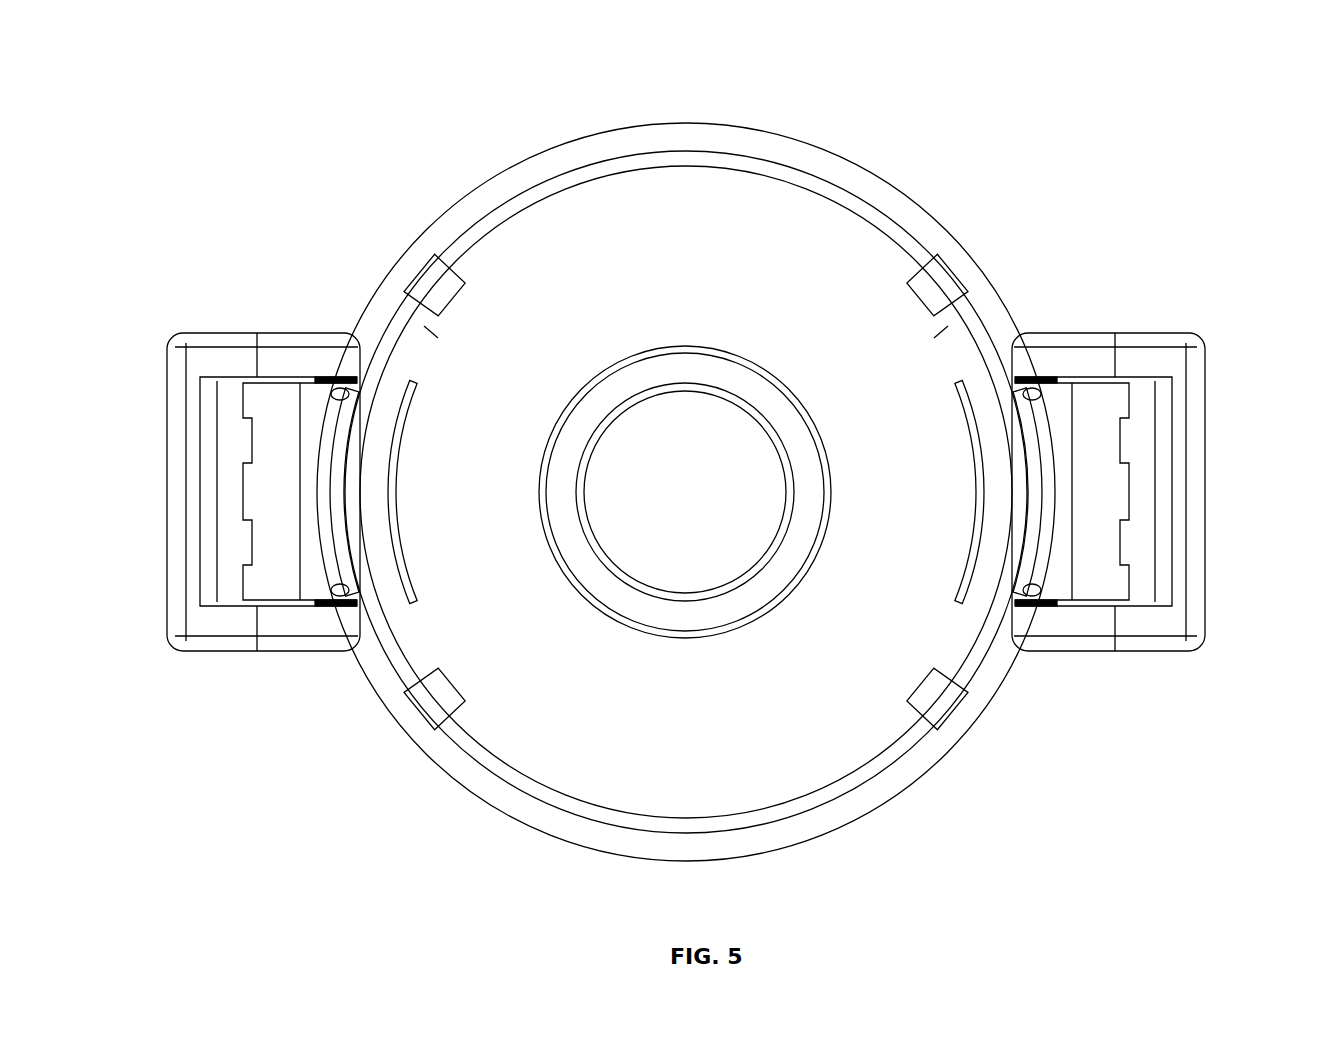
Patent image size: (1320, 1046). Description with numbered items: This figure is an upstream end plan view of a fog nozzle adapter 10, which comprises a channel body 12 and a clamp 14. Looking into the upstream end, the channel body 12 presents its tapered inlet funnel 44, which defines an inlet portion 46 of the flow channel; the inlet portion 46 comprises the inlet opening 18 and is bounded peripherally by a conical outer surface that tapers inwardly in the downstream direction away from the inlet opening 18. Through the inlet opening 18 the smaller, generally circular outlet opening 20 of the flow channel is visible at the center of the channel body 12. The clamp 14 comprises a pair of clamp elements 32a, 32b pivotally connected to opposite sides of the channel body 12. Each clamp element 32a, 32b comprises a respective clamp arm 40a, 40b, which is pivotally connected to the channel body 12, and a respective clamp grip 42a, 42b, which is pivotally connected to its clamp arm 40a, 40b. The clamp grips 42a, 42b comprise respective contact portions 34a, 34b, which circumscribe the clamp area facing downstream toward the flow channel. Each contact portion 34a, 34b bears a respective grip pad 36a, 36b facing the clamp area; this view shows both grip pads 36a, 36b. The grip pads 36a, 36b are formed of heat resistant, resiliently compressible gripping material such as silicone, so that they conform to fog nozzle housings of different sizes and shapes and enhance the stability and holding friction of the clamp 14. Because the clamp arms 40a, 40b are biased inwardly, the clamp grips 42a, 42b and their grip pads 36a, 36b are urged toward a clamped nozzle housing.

The fog nozzle adapter 10 is at (188, 72).
The channel body 12 is at (808, 848).
The clamp 14 is at (1216, 489).
The inlet opening 18 is at (683, 180).
The outlet opening 20 is at (694, 448).
The clamp element 32a is at (345, 660).
The clamp element 32b is at (1020, 660).
The contact portion 34a is at (432, 333).
The contact portion 34b is at (940, 333).
The grip pad 36a is at (400, 420).
The grip pad 36b is at (975, 535).
The clamp arm 40a is at (247, 333).
The clamp arm 40b is at (1085, 333).
The clamp grip 42a is at (460, 278).
The clamp grip 42b is at (893, 262).
The tapered inlet funnel 44 is at (823, 166).
The inlet portion 46 is at (689, 245).